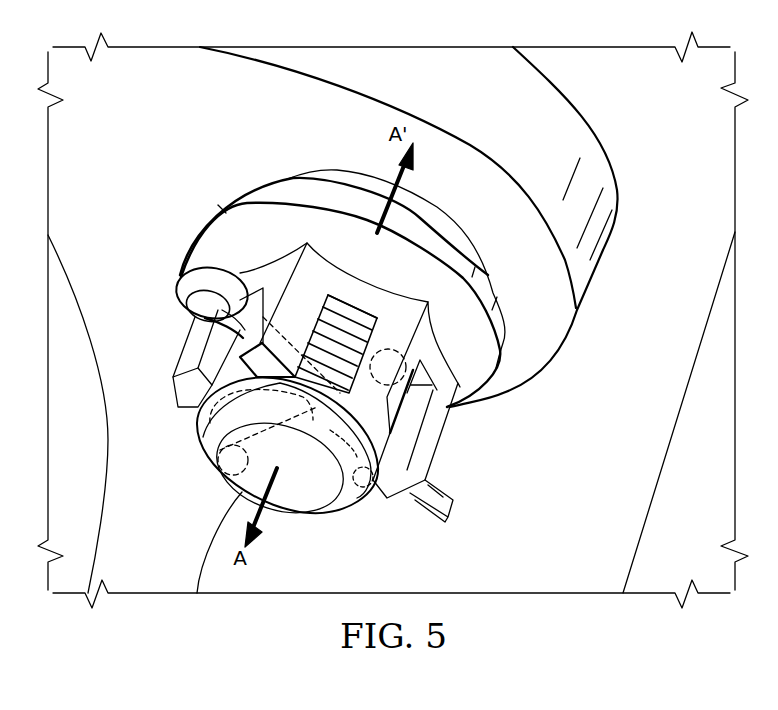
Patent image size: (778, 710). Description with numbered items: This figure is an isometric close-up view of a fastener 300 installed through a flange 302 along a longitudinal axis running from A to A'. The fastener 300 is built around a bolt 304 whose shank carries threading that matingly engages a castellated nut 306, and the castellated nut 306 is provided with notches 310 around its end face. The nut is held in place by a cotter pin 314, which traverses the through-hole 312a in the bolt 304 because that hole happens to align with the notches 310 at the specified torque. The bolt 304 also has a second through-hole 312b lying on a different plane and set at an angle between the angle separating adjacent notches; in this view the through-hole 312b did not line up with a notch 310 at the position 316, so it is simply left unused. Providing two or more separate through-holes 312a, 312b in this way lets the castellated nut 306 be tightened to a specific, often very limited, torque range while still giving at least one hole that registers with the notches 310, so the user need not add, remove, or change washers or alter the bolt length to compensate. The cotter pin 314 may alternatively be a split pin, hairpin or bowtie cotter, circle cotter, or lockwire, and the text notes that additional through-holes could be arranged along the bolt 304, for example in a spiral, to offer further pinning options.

The fastener 300 is at (511, 474).
The flange 302 is at (113, 125).
The bolt 304 is at (283, 512).
The castellated nut 306 is at (260, 180).
The notches 310 is at (421, 410).
The through-hole 312a is at (367, 492).
The through-hole 312b is at (220, 482).
The cotter pin 314 is at (180, 283).
The position 316 is at (400, 333).